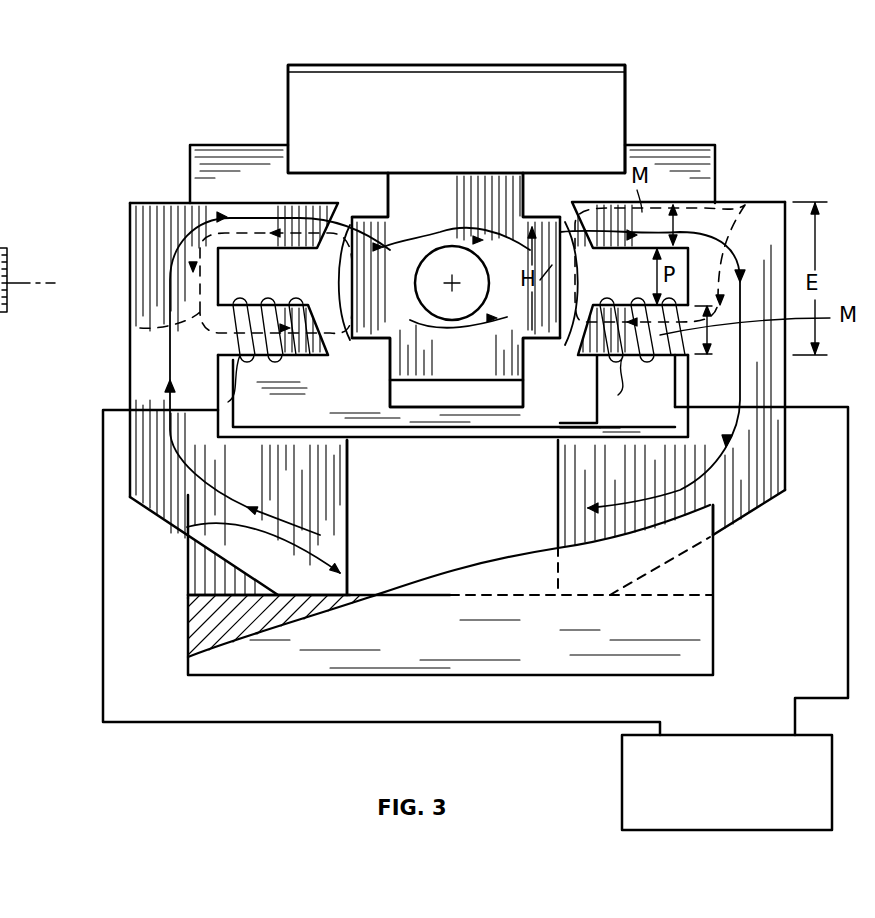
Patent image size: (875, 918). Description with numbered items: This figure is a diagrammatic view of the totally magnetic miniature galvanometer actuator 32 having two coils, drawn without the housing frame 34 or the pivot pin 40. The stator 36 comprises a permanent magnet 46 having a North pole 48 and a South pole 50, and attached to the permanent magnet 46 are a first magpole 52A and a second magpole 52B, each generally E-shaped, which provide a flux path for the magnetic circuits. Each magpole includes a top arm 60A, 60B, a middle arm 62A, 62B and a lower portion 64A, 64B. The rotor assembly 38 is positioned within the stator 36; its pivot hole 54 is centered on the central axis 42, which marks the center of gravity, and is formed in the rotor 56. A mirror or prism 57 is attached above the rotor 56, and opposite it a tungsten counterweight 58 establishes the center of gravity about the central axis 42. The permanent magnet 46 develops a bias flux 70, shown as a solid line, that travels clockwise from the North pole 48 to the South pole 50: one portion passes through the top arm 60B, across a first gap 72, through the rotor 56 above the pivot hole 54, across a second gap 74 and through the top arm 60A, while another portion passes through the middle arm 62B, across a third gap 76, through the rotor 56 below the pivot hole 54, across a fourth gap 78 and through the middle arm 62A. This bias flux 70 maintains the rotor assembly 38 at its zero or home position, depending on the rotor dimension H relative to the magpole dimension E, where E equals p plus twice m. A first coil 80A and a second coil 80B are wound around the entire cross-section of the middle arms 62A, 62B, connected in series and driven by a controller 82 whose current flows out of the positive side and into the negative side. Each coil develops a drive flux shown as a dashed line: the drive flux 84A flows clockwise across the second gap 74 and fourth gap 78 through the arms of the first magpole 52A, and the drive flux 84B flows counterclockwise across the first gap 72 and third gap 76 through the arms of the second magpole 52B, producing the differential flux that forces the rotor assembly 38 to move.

The miniature galvanometer actuator 32 is at (128, 607).
The housing frame 34 is at (297, 665).
The stator 36 is at (160, 202).
The rotor assembly 38 is at (627, 107).
The pivot pin 40 is at (7, 265).
The central axis 42 is at (452, 278).
The permanent magnet 46 is at (90, 633).
The North pole 48 is at (405, 545).
The South pole 50 is at (495, 545).
The first magnetic pole (magpole) 52A is at (753, 517).
The second magnetic pole (magpole) 52B is at (128, 489).
The pivot hole 54 is at (462, 258).
The rotor 56 is at (395, 145).
The mirror or prism 57 is at (590, 65).
The counterweight 58 is at (425, 393).
The top arm (top pole piece) 60A is at (657, 208).
The top arm (top pole piece) 60B is at (262, 212).
The middle arm (middle pole piece) 62A is at (587, 307).
The middle arm (middle pole piece) 62B is at (323, 303).
The lower portion 64A is at (733, 500).
The lower portion 64B is at (172, 503).
The bias flux 70 is at (165, 432).
The first gap 72 is at (342, 218).
The second gap 74 is at (565, 217).
The third gap 76 is at (328, 345).
The fourth gap 78 is at (572, 343).
The first coil 80A is at (627, 360).
The second coil 80B is at (240, 372).
The controller 82 is at (622, 768).
The drive flux 84A is at (745, 205).
The drive flux 84B is at (140, 328).